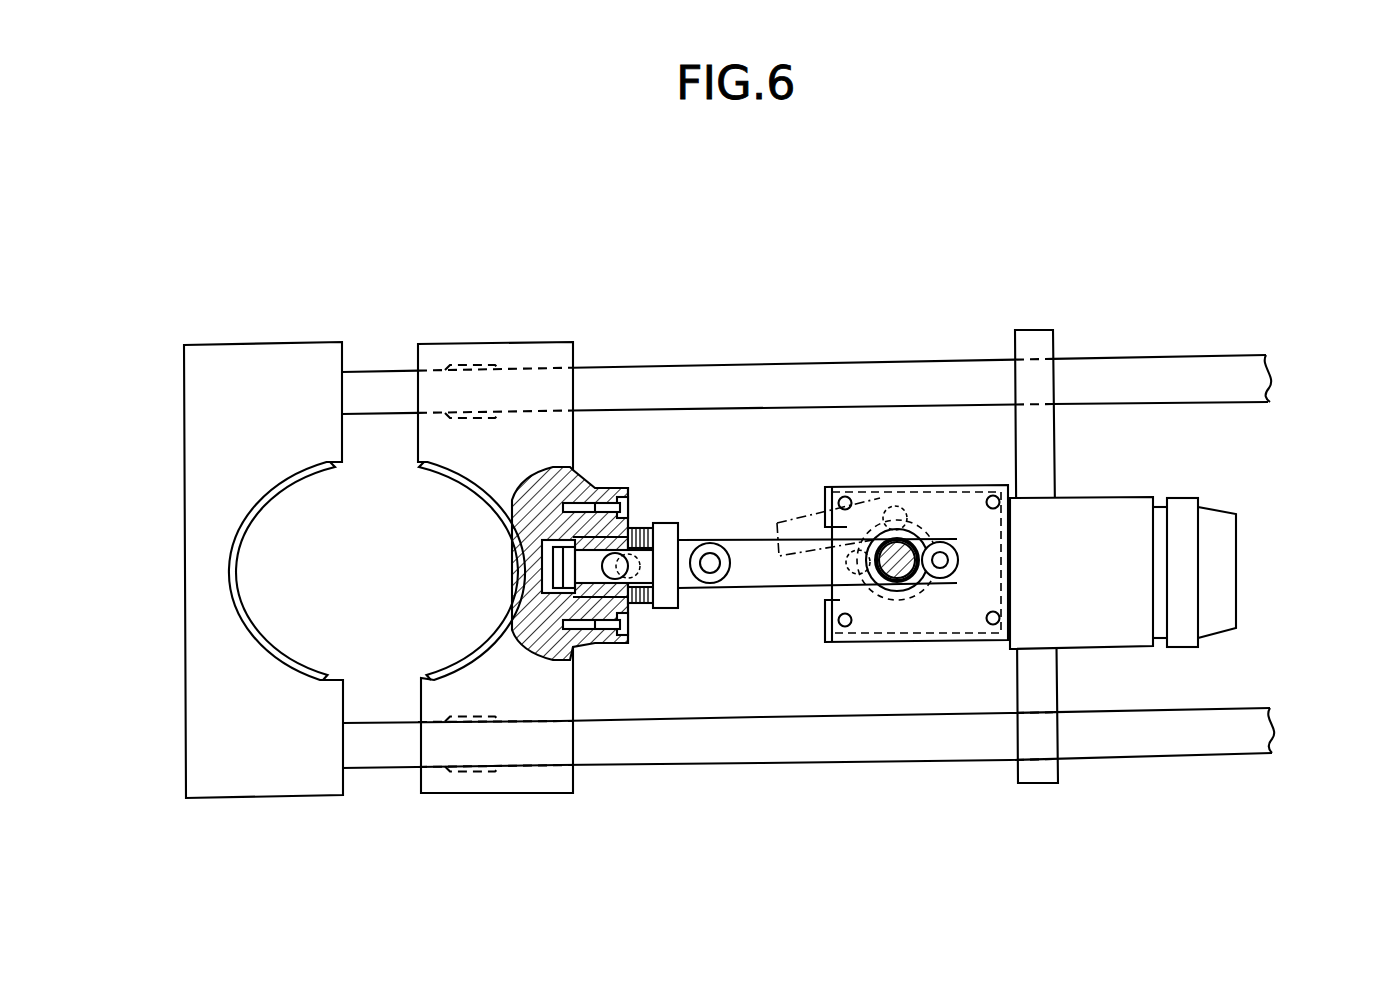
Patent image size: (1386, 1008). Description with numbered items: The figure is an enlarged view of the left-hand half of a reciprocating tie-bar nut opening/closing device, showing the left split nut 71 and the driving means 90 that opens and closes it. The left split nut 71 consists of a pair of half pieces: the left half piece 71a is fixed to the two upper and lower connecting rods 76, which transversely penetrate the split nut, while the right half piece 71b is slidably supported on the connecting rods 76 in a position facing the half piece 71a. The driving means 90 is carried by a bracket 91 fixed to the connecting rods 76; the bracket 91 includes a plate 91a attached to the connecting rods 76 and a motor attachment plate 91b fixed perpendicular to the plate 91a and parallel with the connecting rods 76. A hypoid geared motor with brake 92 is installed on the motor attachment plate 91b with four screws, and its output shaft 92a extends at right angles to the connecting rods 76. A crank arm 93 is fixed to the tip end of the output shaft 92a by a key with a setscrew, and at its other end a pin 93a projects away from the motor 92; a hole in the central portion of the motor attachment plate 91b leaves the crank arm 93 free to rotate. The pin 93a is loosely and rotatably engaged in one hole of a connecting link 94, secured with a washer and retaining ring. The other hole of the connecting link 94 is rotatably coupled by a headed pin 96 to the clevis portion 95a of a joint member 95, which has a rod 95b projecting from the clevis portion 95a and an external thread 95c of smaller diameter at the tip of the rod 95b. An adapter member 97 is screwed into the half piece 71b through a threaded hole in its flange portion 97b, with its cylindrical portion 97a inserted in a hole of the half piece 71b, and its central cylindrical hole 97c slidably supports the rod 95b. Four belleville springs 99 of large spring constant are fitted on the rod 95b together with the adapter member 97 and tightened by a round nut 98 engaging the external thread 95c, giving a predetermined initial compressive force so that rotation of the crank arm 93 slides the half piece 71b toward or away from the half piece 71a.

The left split nut 71 is at (378, 508).
The left half piece 71a is at (292, 343).
The right half piece 71b is at (428, 343).
The connecting rods 76 is at (1240, 710).
The driving means 90 is at (881, 214).
The bracket 91 is at (1091, 504).
The plate 91a is at (1040, 330).
The motor attachment plate 91b is at (985, 487).
The geared motor with brake 92 is at (1125, 650).
The output shaft 92a is at (877, 487).
The crank arm 93 is at (945, 587).
The pin 93a is at (950, 583).
The connecting link 94 is at (790, 588).
The joint member 95 is at (660, 738).
The clevis portion 95a is at (695, 610).
The rod 95b is at (605, 642).
The external thread 95c is at (585, 650).
The headed pin 96 is at (713, 523).
The adapter member 97 is at (670, 421).
The cylindrical portion 97a is at (592, 484).
The flange portion 97b is at (611, 488).
The cylindrical hole 97c is at (647, 527).
The round nut 98 is at (557, 467).
The belleville springs 99 is at (710, 545).